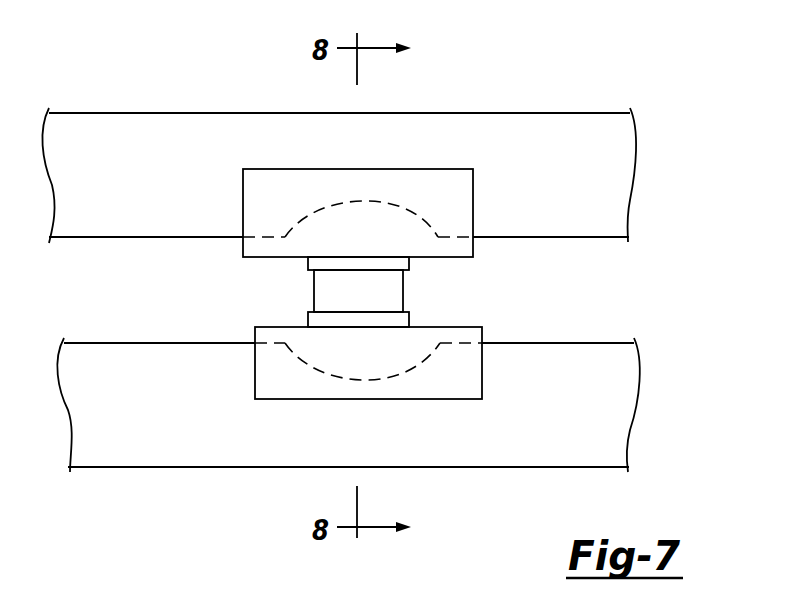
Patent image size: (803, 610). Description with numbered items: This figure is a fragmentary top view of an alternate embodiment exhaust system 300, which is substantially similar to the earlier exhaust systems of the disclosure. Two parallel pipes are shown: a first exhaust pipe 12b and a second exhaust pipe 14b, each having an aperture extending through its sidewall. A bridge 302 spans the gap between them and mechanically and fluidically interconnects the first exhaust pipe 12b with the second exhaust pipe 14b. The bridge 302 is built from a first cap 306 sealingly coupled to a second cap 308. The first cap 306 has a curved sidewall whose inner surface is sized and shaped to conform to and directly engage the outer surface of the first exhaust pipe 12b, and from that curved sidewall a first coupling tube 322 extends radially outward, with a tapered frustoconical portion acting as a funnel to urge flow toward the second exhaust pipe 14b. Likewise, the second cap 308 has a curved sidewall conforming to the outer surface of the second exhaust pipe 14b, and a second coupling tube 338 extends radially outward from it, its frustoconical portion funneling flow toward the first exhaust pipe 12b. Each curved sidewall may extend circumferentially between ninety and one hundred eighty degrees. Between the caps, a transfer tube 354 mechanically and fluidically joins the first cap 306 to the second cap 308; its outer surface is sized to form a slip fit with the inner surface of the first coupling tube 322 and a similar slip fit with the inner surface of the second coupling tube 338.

The exhaust system 300 is at (604, 56).
The second exhaust pipe 14b is at (541, 128).
The first exhaust pipe 12b is at (522, 445).
The second cap 308 is at (260, 257).
The second coupling tube 338 is at (327, 265).
The bridge 302 is at (428, 310).
The transfer tube 354 is at (377, 287).
The first cap 306 is at (266, 328).
The first coupling tube 322 is at (335, 318).